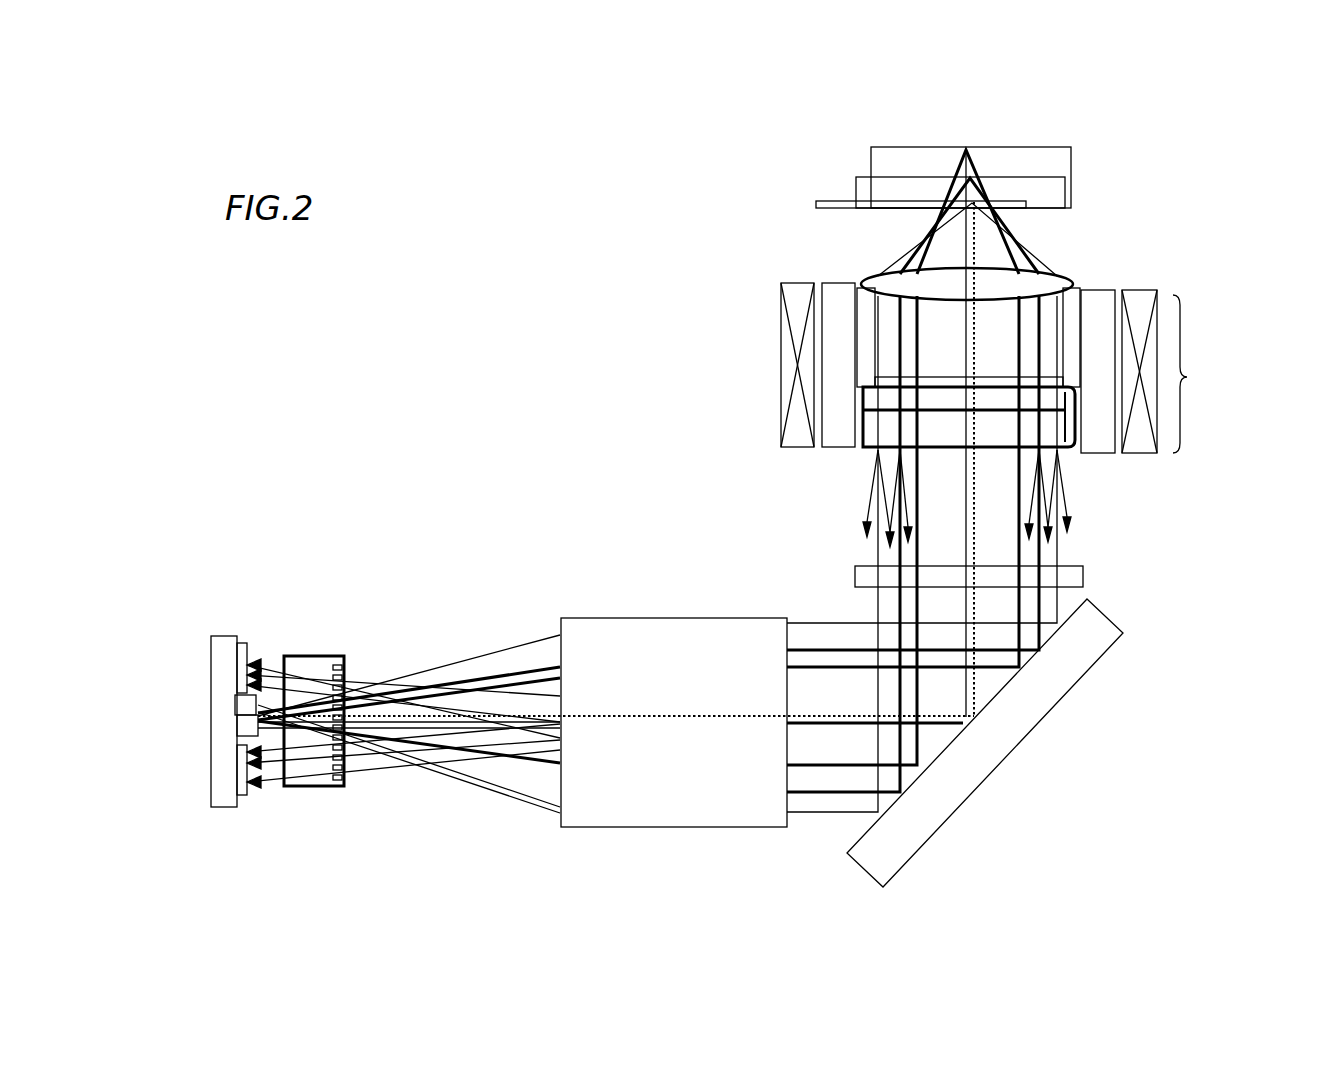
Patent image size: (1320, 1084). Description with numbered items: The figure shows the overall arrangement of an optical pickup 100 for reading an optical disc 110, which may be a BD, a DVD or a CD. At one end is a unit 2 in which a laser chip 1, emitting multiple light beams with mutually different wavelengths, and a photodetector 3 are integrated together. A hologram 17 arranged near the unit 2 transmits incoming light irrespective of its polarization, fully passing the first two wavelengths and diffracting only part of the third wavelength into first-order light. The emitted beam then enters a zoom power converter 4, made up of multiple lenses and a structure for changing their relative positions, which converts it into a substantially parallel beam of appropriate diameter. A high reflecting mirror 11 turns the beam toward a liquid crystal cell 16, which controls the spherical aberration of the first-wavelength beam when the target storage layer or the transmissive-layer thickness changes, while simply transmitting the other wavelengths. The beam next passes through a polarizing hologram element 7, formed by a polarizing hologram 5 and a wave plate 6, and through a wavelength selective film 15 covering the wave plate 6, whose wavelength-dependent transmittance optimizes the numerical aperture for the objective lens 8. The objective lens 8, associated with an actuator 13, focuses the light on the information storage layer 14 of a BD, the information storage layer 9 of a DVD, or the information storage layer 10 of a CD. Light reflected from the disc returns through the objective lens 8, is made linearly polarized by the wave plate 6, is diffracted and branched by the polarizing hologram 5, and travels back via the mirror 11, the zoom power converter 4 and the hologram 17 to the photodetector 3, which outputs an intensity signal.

The laser chip 1 is at (254, 728).
The unit 2 is at (225, 638).
The photodetector 3 is at (242, 690).
The zoom power converter 4 is at (642, 827).
The polarizing hologram 5 is at (886, 433).
The wave plate 6 is at (880, 400).
The polarizing hologram element 7 is at (1073, 417).
The objective lens 8 is at (1045, 283).
The information storage layer 9 is at (1033, 178).
The information storage layer 10 is at (913, 148).
The high reflecting mirror 11 is at (993, 743).
The actuator 13 is at (1188, 378).
The information storage layer 14 is at (817, 199).
The wavelength selective film 15 is at (880, 380).
The liquid crystal cell 16 is at (1083, 577).
The hologram 17 is at (314, 664).
The optical pickup 100 is at (538, 476).
The optical disc 110 is at (979, 203).